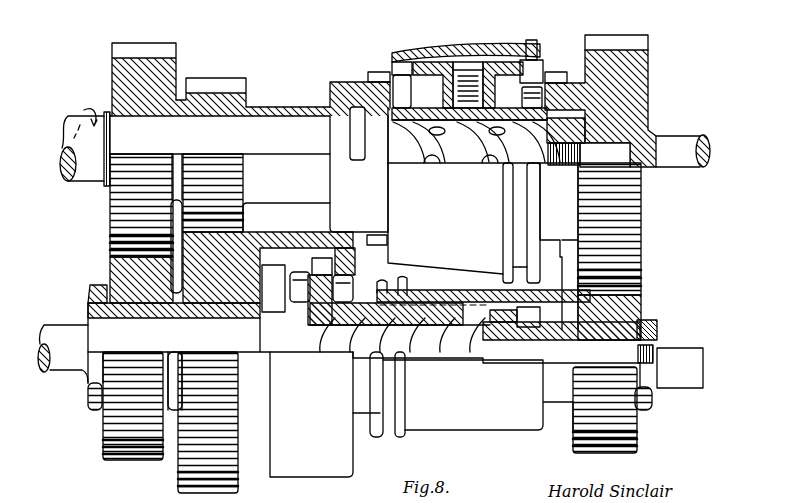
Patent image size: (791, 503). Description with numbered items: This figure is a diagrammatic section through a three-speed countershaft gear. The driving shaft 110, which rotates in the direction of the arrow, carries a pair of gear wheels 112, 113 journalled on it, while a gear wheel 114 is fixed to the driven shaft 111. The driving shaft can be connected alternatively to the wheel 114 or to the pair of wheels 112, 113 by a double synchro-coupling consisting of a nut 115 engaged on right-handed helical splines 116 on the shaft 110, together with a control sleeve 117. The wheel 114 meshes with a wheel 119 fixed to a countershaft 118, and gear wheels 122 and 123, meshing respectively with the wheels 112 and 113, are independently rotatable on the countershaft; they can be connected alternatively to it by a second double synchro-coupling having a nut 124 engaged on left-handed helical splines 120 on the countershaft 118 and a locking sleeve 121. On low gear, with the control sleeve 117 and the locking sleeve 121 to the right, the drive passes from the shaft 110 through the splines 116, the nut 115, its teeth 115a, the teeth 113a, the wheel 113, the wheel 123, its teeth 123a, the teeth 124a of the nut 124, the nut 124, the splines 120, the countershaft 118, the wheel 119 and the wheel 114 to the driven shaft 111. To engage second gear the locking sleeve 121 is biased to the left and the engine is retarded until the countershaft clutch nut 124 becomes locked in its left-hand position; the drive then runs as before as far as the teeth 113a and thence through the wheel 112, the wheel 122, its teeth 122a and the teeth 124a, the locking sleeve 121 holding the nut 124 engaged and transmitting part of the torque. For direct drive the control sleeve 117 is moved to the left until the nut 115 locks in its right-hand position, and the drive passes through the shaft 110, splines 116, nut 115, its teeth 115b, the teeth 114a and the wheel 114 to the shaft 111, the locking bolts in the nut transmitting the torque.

The driving shaft 110 is at (73, 113).
The driven shaft 111 is at (668, 133).
The gear wheel 112 is at (151, 47).
The gear wheel 113 is at (218, 80).
The teeth 113a is at (368, 76).
The gear wheel 114 is at (637, 46).
The teeth 114a is at (563, 71).
The nut 115 is at (433, 58).
The teeth 115a is at (395, 67).
The teeth 115b is at (526, 64).
The right-handed helical splines 116 is at (459, 165).
The control sleeve 117 is at (466, 60).
The countershaft 118 is at (63, 333).
The gear wheel 119 is at (638, 432).
The left-handed helical splines 120 is at (418, 353).
The locking sleeve 121 is at (510, 433).
The gear wheel 122 is at (103, 432).
The teeth 122a is at (295, 258).
The gear wheel 123 is at (238, 477).
The teeth 123a is at (350, 265).
The nut 124 is at (470, 353).
The teeth 124a is at (323, 258).